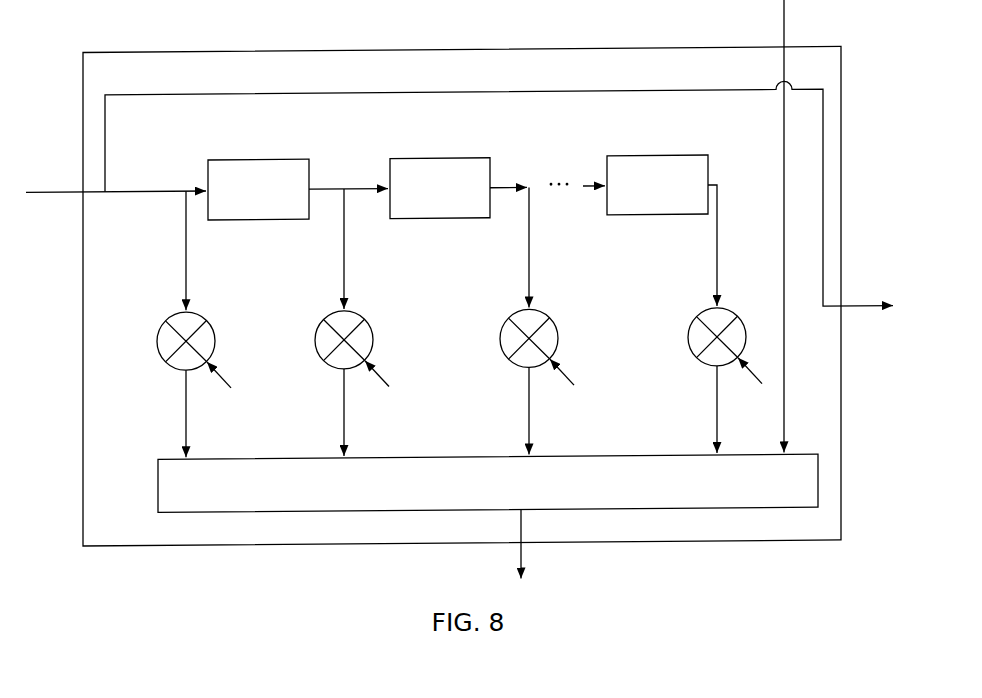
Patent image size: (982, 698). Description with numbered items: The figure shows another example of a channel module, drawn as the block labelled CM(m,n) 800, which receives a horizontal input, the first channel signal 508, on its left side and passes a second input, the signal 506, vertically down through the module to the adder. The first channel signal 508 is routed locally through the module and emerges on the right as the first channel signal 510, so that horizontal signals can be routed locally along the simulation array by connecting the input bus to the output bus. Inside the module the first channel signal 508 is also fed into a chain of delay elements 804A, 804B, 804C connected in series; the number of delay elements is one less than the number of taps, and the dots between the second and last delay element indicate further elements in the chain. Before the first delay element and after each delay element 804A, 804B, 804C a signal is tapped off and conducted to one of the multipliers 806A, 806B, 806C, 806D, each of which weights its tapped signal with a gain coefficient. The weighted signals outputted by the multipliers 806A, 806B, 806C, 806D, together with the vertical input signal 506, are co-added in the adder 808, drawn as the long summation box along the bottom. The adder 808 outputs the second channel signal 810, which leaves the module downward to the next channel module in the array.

The combining module CM(m,n) 800 is at (831, 81).
The input signal line 506 is at (784, 21).
The first (m,n-1)th channel signal 508 is at (57, 192).
The first (m,n)th channel signal 510 is at (866, 317).
The delay element 804A is at (259, 160).
The delay element 804B is at (440, 161).
The delay element 804C is at (658, 158).
The multiplier 806A is at (157, 344).
The multiplier 806B is at (314, 343).
The multiplier 806C is at (498, 342).
The multiplier 806D is at (685, 342).
The adder 808 is at (157, 489).
The second (m-1,n)th channel signal 810 is at (522, 561).